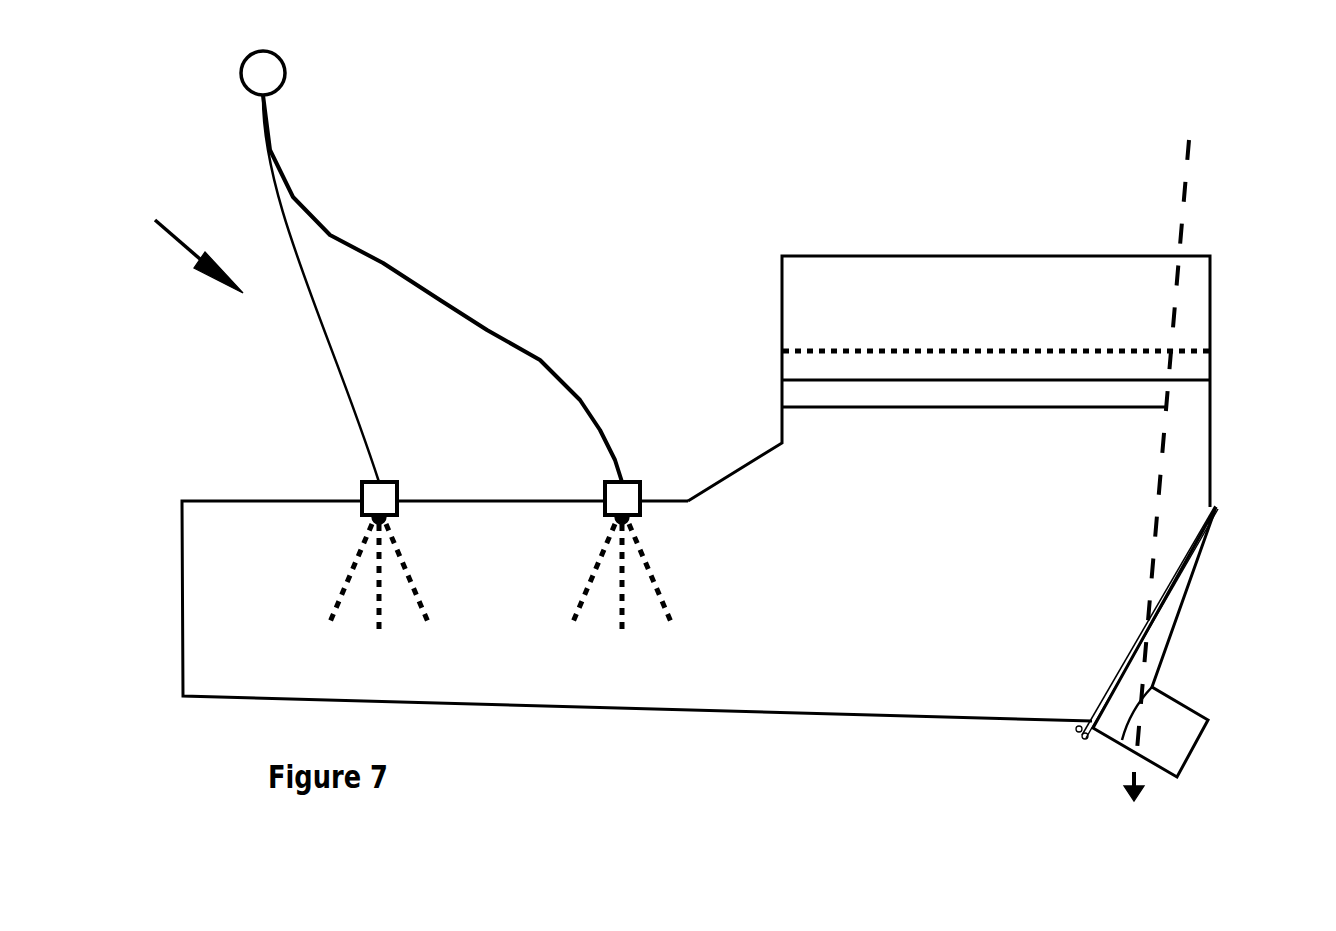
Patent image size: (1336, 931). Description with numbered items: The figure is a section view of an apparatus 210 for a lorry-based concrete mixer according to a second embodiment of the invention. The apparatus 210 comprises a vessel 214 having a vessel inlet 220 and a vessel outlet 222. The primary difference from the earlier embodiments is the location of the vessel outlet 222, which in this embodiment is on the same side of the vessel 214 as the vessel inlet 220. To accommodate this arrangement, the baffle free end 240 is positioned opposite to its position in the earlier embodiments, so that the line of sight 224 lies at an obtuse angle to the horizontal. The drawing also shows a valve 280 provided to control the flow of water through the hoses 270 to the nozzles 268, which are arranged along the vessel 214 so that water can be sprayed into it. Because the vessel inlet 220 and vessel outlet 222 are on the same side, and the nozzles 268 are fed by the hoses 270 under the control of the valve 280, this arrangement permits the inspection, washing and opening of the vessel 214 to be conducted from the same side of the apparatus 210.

The apparatus 210 is at (175, 241).
The vessel 214 is at (312, 490).
The vessel inlet 220 is at (780, 334).
The vessel outlet 222 is at (1100, 671).
The line of sight 224 is at (1188, 197).
The baffle free end 240 is at (1150, 410).
The nozzles 268 is at (610, 490).
The hoses 270 is at (320, 302).
The valve 280 is at (237, 106).